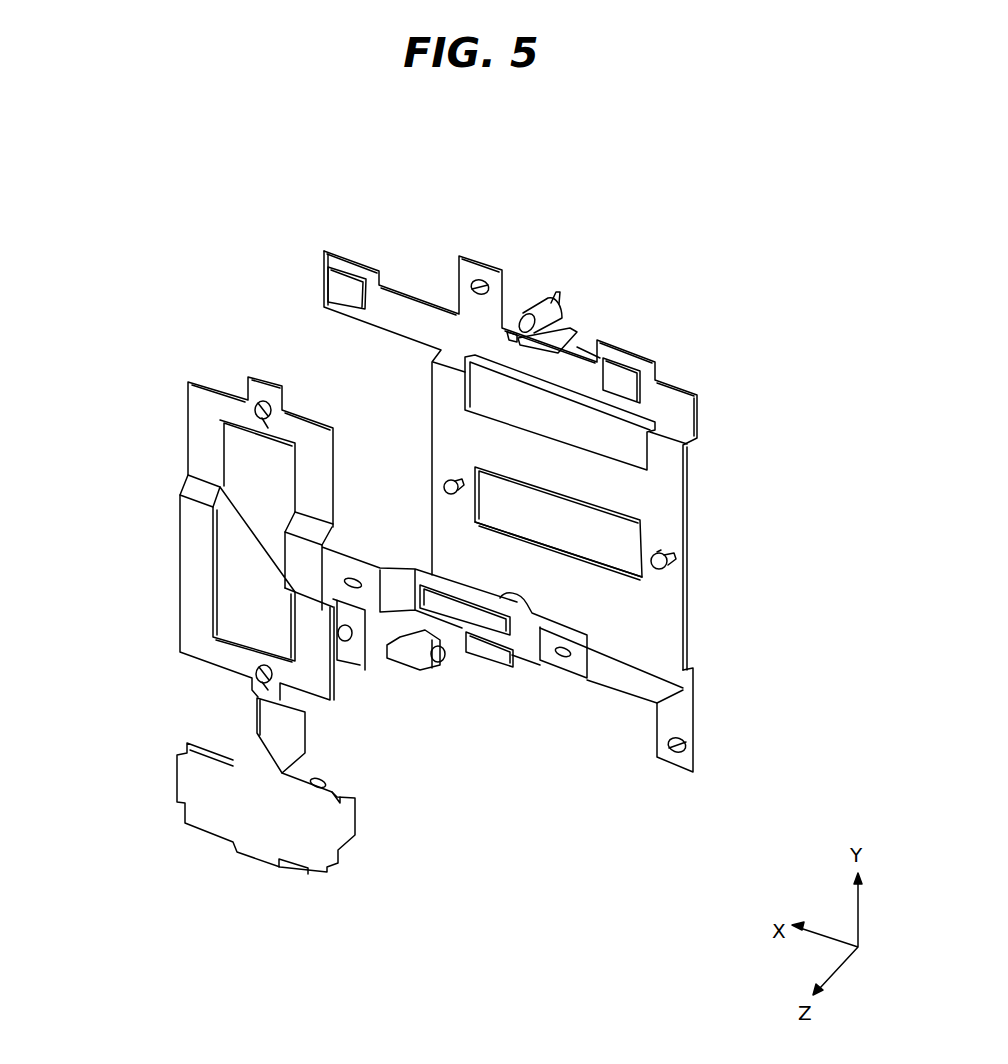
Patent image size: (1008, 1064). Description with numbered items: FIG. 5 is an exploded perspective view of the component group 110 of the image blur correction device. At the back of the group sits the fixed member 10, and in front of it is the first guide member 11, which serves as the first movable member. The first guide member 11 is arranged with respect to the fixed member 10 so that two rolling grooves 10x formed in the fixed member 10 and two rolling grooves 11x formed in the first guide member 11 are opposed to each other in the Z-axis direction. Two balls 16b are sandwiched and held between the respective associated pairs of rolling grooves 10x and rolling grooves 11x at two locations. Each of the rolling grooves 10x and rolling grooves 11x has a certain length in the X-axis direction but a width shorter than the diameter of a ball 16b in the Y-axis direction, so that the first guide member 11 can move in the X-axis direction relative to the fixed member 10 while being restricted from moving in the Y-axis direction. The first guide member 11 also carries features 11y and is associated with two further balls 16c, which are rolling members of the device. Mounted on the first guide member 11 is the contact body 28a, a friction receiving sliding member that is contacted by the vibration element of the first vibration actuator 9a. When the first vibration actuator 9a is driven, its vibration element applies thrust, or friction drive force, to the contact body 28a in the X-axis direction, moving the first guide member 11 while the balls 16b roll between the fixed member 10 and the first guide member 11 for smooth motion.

The component group 110 is at (362, 160).
The fixed member 10 is at (687, 708).
The rolling grooves 10x is at (479, 525).
The contact body 28a is at (483, 618).
The balls 16b is at (455, 483).
The first guide member 11 is at (422, 568).
The rolling grooves 11x is at (562, 658).
The holes 11y is at (252, 678).
The balls 16c is at (257, 410).
The first vibration actuator 9a is at (233, 807).